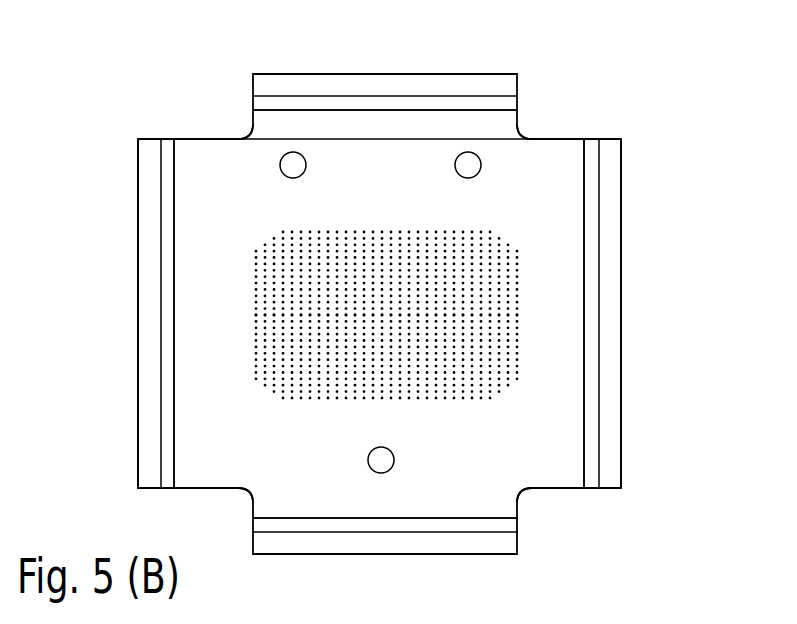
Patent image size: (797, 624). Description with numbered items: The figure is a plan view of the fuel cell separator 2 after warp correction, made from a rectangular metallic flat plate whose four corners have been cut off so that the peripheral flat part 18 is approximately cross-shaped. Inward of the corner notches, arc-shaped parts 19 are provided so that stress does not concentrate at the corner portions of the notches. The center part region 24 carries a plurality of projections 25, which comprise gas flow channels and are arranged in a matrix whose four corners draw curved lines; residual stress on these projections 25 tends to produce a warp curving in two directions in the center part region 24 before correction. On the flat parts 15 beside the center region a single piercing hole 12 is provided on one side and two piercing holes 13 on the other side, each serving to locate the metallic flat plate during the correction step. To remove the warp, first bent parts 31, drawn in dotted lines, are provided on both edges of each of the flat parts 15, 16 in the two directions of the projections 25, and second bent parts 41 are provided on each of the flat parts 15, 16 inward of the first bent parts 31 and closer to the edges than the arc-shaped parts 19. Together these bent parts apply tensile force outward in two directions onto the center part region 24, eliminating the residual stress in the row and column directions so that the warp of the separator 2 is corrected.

The fuel cell separator 2 is at (658, 146).
The piercing hole 12 is at (378, 465).
The piercing holes 13 is at (288, 158).
The flat parts 15 is at (387, 128).
The flat parts 16 is at (190, 340).
The flat part 18 is at (214, 240).
The arc-shaped parts 19 is at (245, 132).
The center part region 24 is at (322, 355).
The projections 25 is at (478, 400).
The first bent parts 31 is at (415, 72).
The second bent parts 41 is at (348, 103).